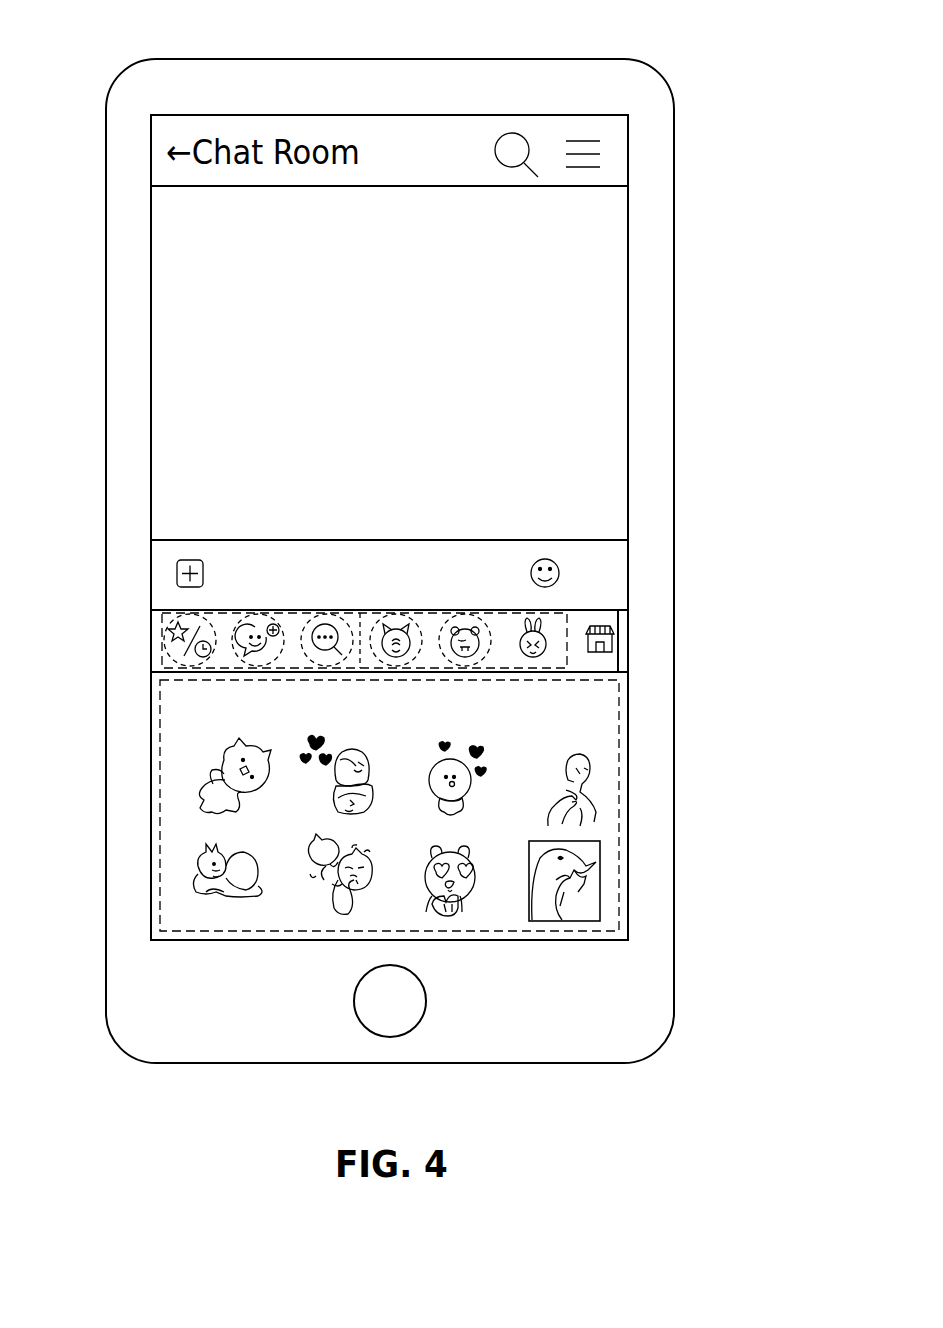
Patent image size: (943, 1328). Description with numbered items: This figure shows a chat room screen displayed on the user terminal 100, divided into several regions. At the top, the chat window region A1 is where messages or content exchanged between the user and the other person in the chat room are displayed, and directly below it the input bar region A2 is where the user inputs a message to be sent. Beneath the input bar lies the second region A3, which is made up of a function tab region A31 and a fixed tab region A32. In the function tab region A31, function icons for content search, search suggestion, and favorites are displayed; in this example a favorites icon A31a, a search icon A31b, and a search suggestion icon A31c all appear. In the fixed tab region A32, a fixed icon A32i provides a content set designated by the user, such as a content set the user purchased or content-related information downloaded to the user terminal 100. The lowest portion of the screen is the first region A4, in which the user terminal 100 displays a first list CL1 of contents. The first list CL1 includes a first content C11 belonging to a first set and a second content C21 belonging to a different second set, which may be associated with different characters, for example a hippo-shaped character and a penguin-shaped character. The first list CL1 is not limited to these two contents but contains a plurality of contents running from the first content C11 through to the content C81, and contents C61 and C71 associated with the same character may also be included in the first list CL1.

The user terminal 100 is at (388, 59).
The chat window region A1 is at (636, 187).
The input bar region A2 is at (636, 541).
The second region A3 is at (636, 612).
The function tab region A31 is at (303, 608).
The favorites icon A31a is at (166, 636).
The search icon A31b is at (238, 616).
The search suggestion icon A31c is at (310, 612).
The fixed tab region A32 is at (555, 648).
The fixed icon A32i is at (413, 622).
The first region A4 is at (636, 680).
The first list CL1 is at (280, 931).
The first content C11 is at (222, 762).
The second content C21 is at (322, 778).
The content C61 is at (334, 914).
The content C71 is at (452, 916).
The content C81 is at (558, 921).